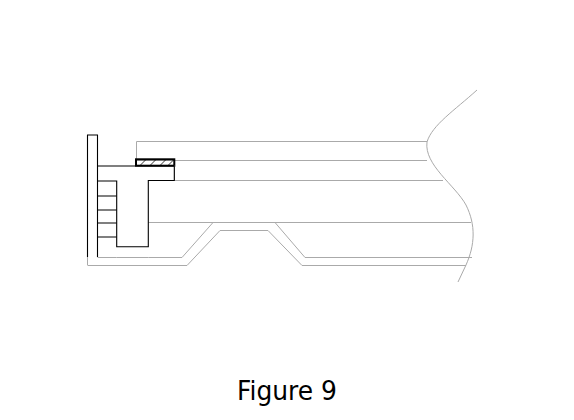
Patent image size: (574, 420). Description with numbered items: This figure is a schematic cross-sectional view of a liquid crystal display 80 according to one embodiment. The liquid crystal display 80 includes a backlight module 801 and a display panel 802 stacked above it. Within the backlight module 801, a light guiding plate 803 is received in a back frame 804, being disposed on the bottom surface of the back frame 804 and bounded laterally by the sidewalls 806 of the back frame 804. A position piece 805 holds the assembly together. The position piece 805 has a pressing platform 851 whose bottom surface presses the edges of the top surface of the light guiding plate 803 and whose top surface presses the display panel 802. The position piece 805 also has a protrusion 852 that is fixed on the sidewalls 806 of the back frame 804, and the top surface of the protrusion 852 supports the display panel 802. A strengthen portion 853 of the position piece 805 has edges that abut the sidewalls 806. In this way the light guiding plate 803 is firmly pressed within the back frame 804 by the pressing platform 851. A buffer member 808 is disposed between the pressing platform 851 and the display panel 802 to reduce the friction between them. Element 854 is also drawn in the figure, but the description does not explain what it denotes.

The liquid crystal display 80 is at (295, 29).
The backlight module 801 is at (469, 193).
The display panel 802 is at (277, 142).
The light guiding plate 803 is at (438, 207).
The back frame 804 is at (333, 277).
The position piece 805 is at (114, 151).
The sidewalls 806 is at (88, 172).
The buffer member 808 is at (155, 159).
The pressing platform 851 is at (176, 178).
The protrusion 852 is at (88, 233).
The strengthen portion 853 is at (107, 247).
The bottom pad 854 is at (138, 246).